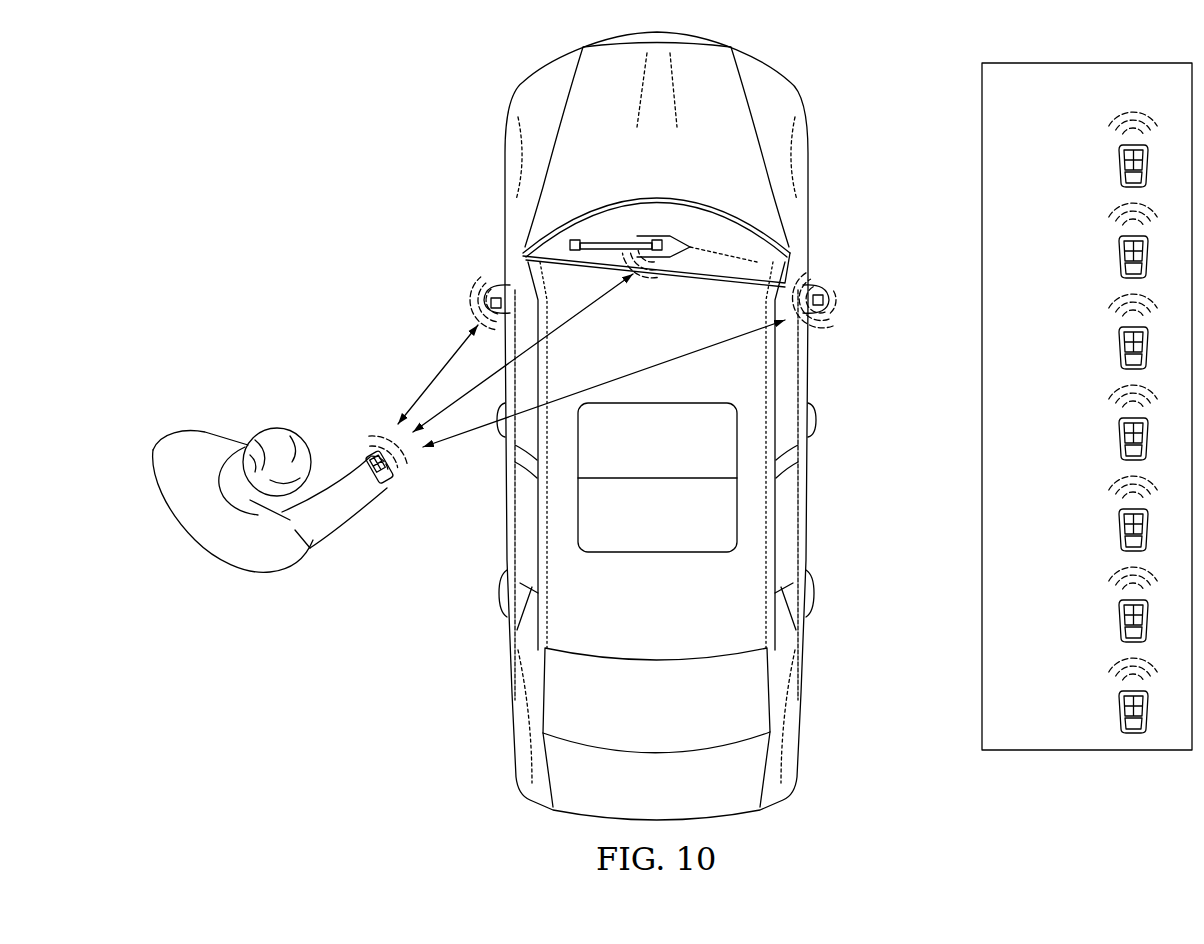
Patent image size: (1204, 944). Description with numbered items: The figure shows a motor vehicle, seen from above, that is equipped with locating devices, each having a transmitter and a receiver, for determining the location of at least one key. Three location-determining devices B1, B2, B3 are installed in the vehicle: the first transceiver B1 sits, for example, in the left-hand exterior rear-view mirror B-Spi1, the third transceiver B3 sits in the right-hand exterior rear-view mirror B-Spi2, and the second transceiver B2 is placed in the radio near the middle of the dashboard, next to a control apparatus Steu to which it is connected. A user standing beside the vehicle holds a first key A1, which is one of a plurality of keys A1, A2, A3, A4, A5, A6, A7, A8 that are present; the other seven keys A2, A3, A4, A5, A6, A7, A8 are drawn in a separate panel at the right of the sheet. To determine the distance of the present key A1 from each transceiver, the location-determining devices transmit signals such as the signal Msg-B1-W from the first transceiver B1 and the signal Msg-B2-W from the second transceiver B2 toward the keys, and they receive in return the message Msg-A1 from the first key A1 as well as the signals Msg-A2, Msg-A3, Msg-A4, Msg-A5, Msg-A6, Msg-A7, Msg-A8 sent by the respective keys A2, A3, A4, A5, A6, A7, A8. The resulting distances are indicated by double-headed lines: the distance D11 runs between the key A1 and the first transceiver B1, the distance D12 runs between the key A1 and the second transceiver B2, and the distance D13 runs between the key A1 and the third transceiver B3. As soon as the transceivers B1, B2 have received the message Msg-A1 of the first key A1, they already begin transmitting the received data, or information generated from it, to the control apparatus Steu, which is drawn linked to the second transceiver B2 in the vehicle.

The control apparatus Steu is at (577, 237).
The location-determining device B1 is at (488, 298).
The location-determining device B2 is at (659, 237).
The location-determining device B3 is at (826, 297).
The left-hand exterior rear-view mirror B-Spi1 is at (488, 285).
The right-hand exterior rear-view mirror B-Spi2 is at (826, 280).
The signal Msg-B1-W is at (460, 310).
The signal Msg-B2-W is at (660, 275).
The distance D11 is at (434, 374).
The distance D12 is at (523, 353).
The distance D13 is at (604, 383).
The first key A1 is at (392, 470).
The message Msg-A1 is at (378, 420).
The key A2 is at (1146, 166).
The signal Msg-A2 is at (1112, 115).
The key A3 is at (1146, 257).
The signal Msg-A3 is at (1112, 206).
The key A4 is at (1146, 348).
The signal Msg-A4 is at (1112, 297).
The key A5 is at (1146, 439).
The signal Msg-A5 is at (1112, 388).
The key A6 is at (1146, 530).
The signal Msg-A6 is at (1112, 479).
The key A7 is at (1146, 621).
The signal Msg-A7 is at (1112, 570).
The key A8 is at (1146, 712).
The signal Msg-A8 is at (1112, 661).